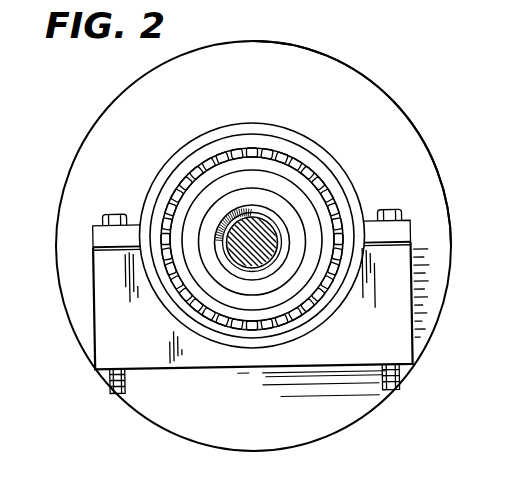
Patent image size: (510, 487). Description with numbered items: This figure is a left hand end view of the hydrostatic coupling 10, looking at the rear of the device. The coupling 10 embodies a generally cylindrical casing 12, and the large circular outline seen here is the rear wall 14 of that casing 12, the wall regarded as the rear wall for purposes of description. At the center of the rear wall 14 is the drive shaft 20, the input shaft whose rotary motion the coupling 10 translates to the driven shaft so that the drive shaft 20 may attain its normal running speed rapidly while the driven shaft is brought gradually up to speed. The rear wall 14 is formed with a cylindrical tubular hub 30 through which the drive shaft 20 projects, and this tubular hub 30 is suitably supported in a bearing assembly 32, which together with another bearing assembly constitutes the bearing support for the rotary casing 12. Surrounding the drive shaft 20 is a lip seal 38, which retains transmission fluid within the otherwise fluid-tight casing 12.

The hydrostatic coupling 10 is at (416, 110).
The casing 12 is at (95, 121).
The rear wall 14 is at (333, 85).
The drive shaft 20 is at (264, 231).
The cylindrical tubular hub 30 is at (328, 220).
The bearing assembly 32 is at (327, 300).
The lip seal 38 is at (277, 268).